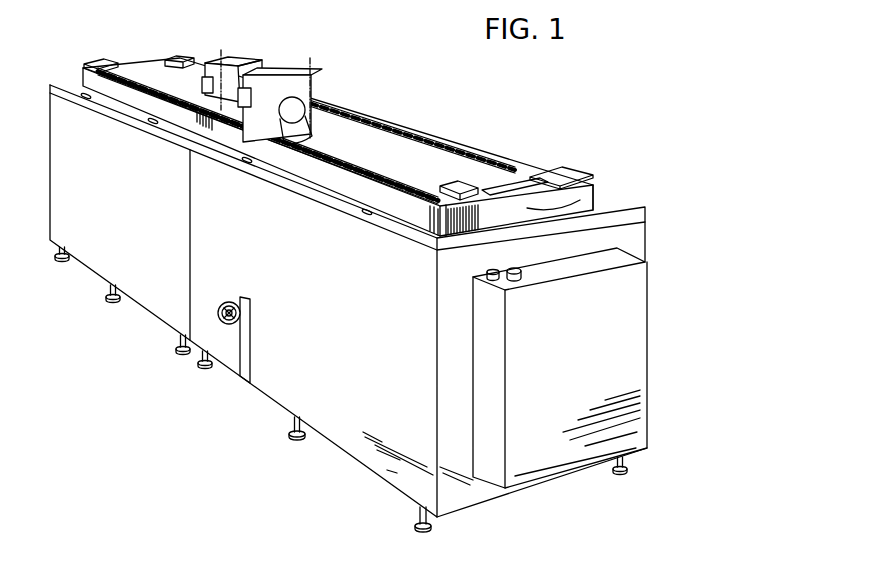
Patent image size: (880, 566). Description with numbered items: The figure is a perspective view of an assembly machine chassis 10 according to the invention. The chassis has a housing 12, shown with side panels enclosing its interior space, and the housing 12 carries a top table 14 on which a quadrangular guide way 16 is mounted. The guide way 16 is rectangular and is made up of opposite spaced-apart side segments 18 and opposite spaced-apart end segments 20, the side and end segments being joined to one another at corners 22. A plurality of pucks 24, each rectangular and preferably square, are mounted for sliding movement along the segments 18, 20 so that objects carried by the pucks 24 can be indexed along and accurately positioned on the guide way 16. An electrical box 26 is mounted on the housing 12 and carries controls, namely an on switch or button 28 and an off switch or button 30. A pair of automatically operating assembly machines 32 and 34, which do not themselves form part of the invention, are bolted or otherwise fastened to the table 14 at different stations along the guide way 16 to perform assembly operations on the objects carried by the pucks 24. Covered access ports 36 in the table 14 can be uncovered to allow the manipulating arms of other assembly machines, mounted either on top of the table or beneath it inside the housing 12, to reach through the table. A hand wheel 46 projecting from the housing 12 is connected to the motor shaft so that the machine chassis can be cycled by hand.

The assembly machine chassis 10 is at (365, 274).
The housing 12 is at (287, 388).
The top table 14 is at (630, 217).
The quadrangular guide way 16 is at (463, 148).
The side segments 18 is at (407, 128).
The end segments 20 is at (152, 62).
The corners 22 is at (83, 76).
The pucks 24 is at (351, 118).
The electrical box 26 is at (634, 363).
The on switch or button 28 is at (493, 282).
The off switch or button 30 is at (517, 280).
The automatically operating assembly machine 32 is at (288, 84).
The automatically operating assembly machine 34 is at (246, 60).
The covered access ports 36 is at (123, 124).
The hand wheel 46 is at (219, 307).